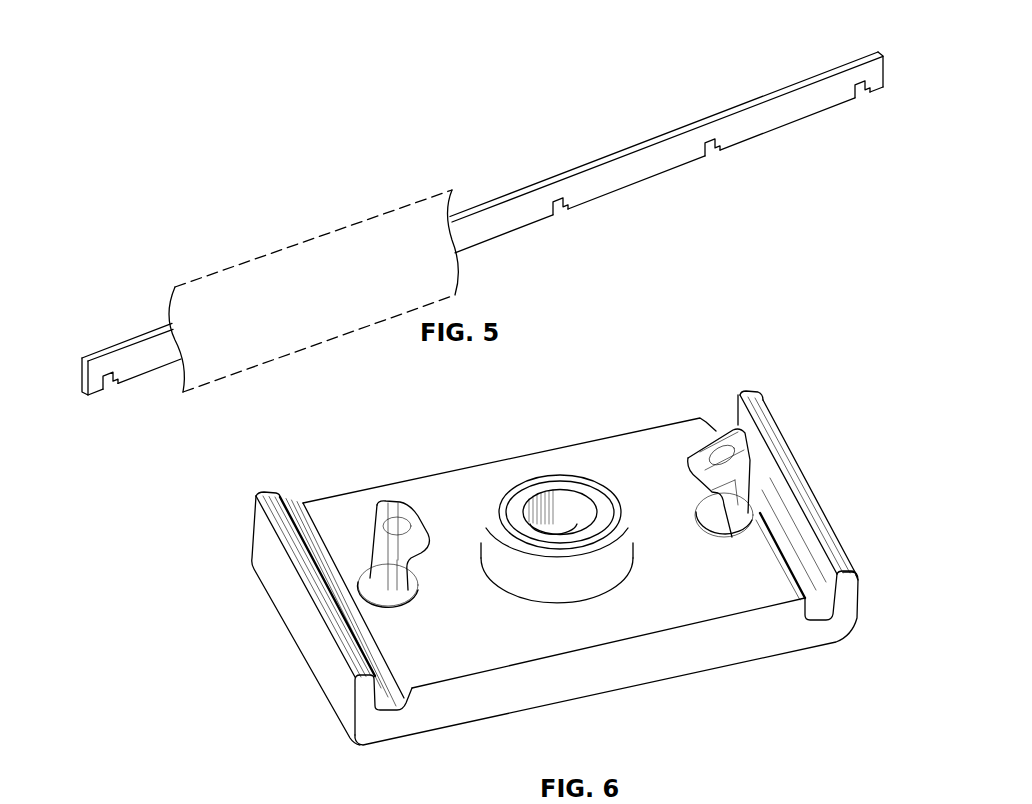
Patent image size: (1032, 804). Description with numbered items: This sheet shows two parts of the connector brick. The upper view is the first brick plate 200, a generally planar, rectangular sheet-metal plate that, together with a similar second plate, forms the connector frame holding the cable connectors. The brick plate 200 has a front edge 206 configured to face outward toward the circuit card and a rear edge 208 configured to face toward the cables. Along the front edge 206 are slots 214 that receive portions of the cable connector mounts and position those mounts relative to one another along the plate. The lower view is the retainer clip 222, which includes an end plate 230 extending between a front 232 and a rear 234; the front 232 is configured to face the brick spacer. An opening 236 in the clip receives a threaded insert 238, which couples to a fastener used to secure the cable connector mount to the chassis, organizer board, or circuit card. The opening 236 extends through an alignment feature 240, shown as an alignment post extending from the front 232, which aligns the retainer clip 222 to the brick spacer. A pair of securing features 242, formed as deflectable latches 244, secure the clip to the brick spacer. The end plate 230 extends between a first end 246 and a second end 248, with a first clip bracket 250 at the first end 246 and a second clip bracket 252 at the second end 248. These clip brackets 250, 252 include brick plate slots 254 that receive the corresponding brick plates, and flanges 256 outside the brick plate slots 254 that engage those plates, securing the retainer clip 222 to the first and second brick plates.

In FIG. 5, the first brick plate 200 is at (431, 141).
In FIG. 5, the front edge 206 is at (509, 233).
In FIG. 5, the rear edge 208 is at (567, 171).
In FIG. 5, the slots 214 is at (561, 221).
In FIG. 6, the retainer clip 222 is at (590, 393).
In FIG. 6, the end plate 230 is at (638, 663).
In FIG. 6, the front 232 is at (705, 598).
In FIG. 6, the rear 234 is at (570, 702).
In FIG. 6, the opening 236 is at (555, 493).
In FIG. 6, the threaded insert 238 is at (560, 530).
In FIG. 6, the alignment feature 240 is at (500, 541).
In FIG. 6, the securing features 242 is at (392, 507).
In FIG. 6, the deflectable latches 244 is at (697, 448).
In FIG. 6, the first end 246 is at (862, 598).
In FIG. 6, the second end 248 is at (308, 625).
In FIG. 6, the first clip bracket 250 is at (746, 380).
In FIG. 6, the second clip bracket 252 is at (283, 490).
In FIG. 6, the brick plate slots 254 is at (785, 495).
In FIG. 6, the flanges 256 is at (828, 532).